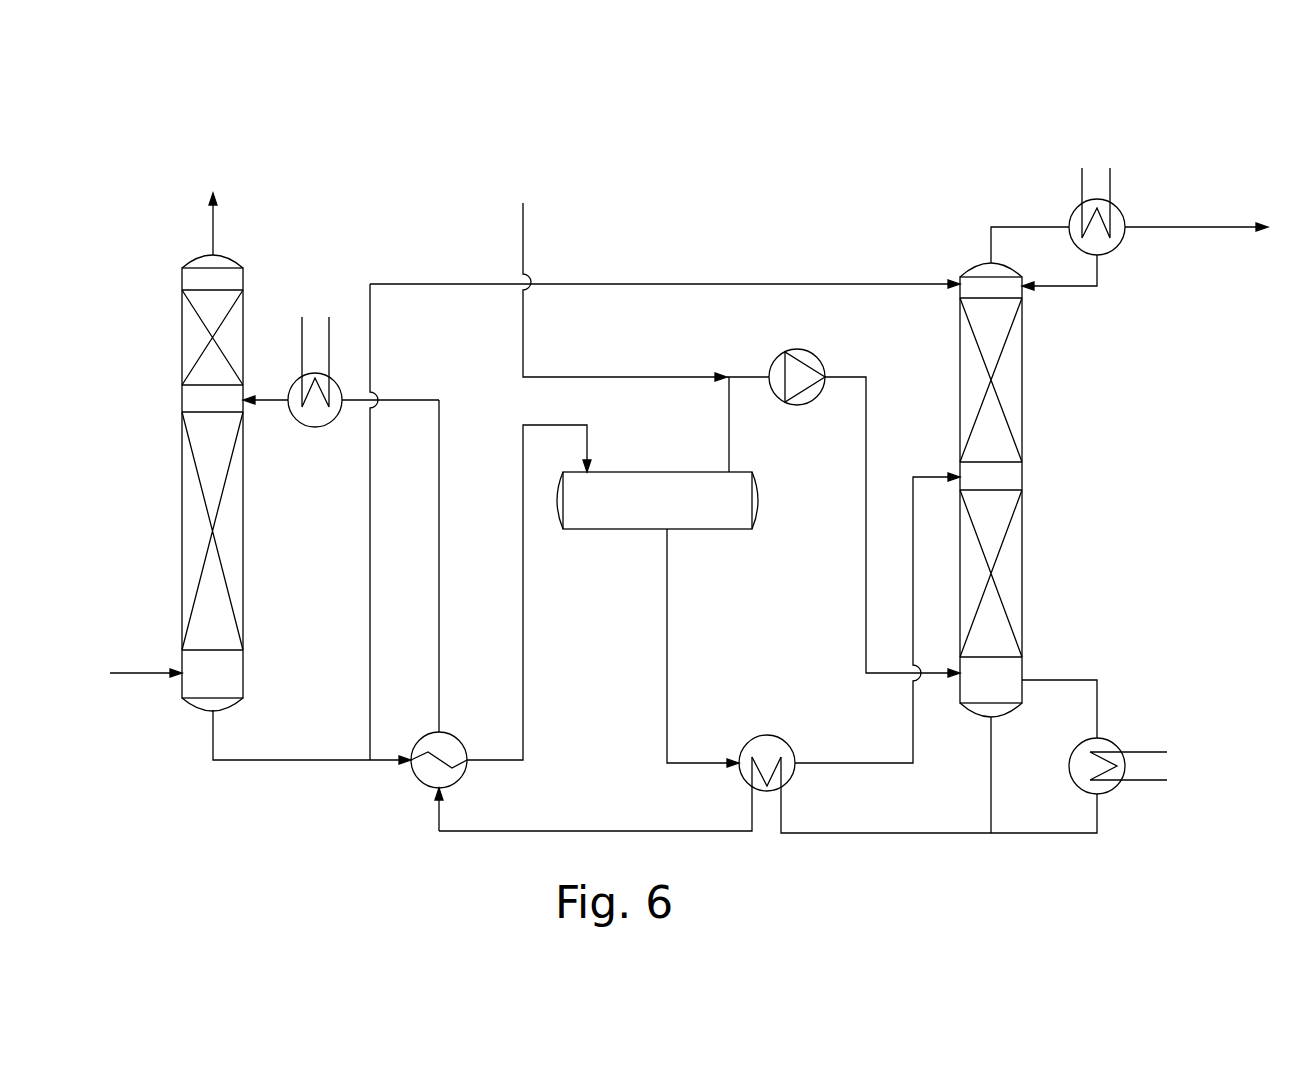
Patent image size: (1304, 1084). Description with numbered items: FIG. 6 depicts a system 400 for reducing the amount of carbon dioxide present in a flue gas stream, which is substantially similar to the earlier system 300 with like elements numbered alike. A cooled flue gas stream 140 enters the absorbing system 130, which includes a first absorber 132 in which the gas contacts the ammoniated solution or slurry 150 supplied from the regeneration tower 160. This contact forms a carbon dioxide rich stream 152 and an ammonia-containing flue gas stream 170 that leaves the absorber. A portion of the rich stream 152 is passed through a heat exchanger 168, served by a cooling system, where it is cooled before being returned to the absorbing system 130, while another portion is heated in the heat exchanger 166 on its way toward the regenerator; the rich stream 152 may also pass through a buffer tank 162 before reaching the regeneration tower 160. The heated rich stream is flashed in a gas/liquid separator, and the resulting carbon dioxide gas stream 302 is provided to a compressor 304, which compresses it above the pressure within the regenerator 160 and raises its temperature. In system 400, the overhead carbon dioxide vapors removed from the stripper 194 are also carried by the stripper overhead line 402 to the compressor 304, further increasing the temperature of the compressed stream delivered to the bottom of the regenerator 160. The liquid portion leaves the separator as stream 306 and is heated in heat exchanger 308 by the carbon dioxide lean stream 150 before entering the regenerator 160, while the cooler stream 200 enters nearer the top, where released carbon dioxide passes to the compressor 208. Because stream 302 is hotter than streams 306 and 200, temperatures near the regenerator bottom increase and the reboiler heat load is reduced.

The absorbing system 130 is at (150, 736).
The first absorber 132 is at (182, 337).
The cooled flue gas stream 140 is at (148, 672).
The ammoniated solution or slurry 150 is at (440, 600).
The CO2 rich stream 152 is at (343, 758).
The regeneration tower 160 is at (960, 360).
The buffer tank 162 is at (1167, 187).
The heat exchanger 166 is at (425, 787).
The heat exchanger 168 is at (318, 427).
The ammonia-containing flue gas stream 170 is at (213, 232).
The stripper 194 is at (528, 163).
The stream 200 is at (370, 598).
The compressor 208 is at (1117, 252).
The system 300 is at (688, 472).
The CO2 gas stream 302 is at (729, 422).
The compressor 304 is at (775, 360).
The stream 306 is at (667, 602).
The heat exchanger 308 is at (755, 738).
The system 400 is at (709, 169).
The stripper overhead line 402 is at (523, 337).